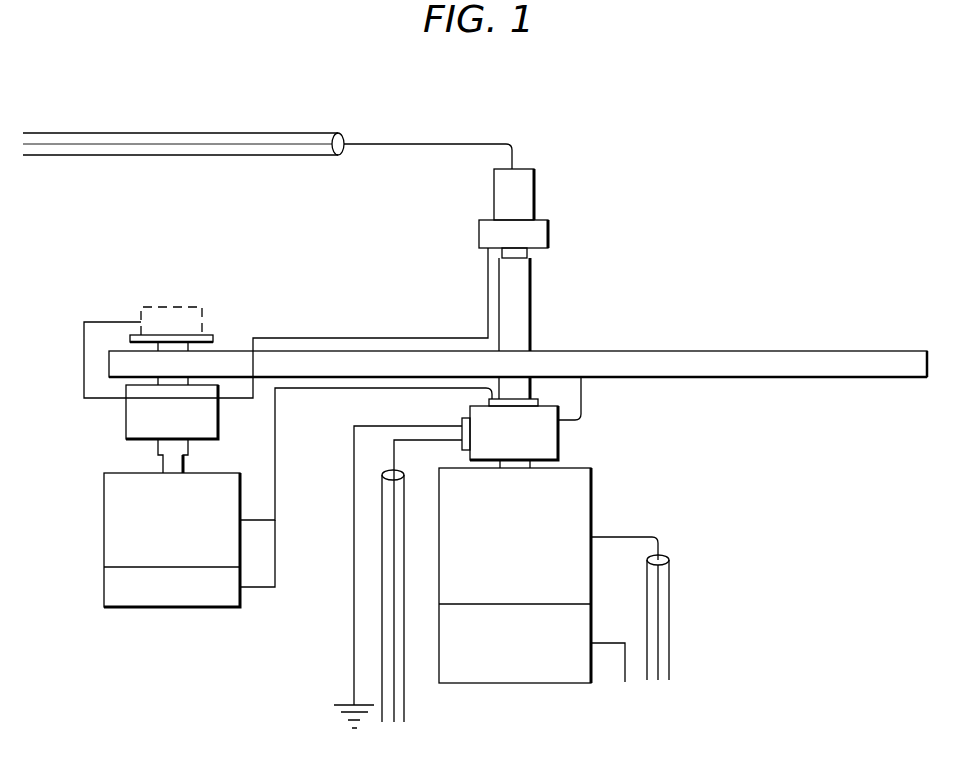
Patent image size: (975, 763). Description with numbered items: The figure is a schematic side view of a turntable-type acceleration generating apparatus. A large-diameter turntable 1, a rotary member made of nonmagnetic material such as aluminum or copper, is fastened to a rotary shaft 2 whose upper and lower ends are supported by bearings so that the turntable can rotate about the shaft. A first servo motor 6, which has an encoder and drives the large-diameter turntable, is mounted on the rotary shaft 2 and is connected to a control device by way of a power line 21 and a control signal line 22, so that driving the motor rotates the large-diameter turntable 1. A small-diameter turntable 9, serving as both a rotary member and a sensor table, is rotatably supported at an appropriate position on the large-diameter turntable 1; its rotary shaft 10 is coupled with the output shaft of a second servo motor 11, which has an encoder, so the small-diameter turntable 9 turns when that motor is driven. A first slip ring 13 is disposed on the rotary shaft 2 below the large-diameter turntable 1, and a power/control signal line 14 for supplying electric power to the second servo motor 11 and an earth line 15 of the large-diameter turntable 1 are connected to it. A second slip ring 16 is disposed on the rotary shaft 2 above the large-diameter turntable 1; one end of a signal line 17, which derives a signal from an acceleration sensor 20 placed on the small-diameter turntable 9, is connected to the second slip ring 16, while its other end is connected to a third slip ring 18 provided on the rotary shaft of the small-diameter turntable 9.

The large-diameter turntable 1 is at (812, 351).
The rotary shaft 2 is at (530, 306).
The first servo motor 6 is at (592, 622).
The small-diameter turntable 9 is at (213, 338).
The rotary shaft 10 is at (163, 468).
The second servo motor 11 is at (104, 587).
The first slip ring 13 is at (560, 435).
The power/control signal line 14 is at (277, 483).
The earth line 15 is at (581, 398).
The second slip ring 16 is at (534, 195).
The signal line 17 is at (488, 294).
The third slip ring 18 is at (126, 427).
The acceleration sensor 20 is at (172, 307).
The power line 21 is at (670, 618).
The control signal line 22 is at (627, 668).